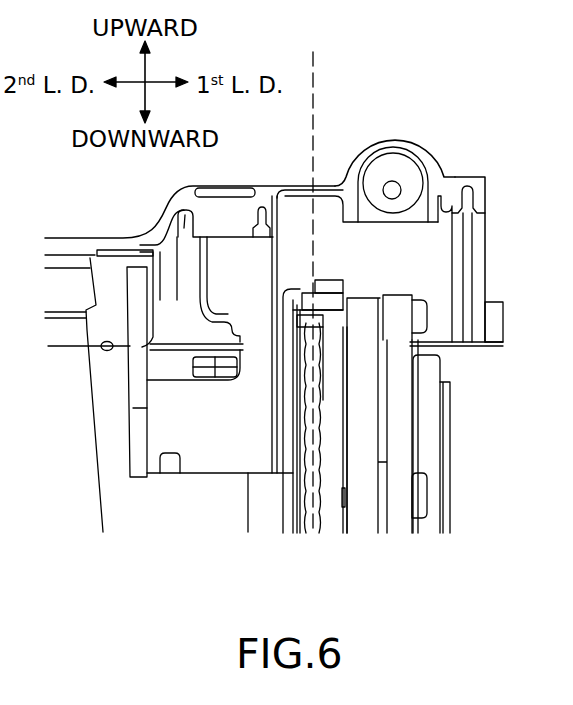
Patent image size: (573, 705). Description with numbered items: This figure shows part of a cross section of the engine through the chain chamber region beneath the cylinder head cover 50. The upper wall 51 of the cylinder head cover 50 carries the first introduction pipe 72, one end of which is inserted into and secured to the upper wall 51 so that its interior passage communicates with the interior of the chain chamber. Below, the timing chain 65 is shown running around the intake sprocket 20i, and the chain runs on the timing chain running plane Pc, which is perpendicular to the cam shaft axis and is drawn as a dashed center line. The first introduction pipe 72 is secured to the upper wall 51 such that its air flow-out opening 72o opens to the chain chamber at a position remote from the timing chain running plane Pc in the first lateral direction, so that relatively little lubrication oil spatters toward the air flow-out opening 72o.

The cylinder head cover 50 is at (66, 230).
The upper wall 51 is at (477, 183).
The first introduction pipe 72 is at (386, 168).
The air flow-out opening 72o is at (395, 190).
The timing chain 65 is at (330, 312).
The intake sprocket 20i is at (313, 535).
The timing chain running plane Pc is at (315, 62).